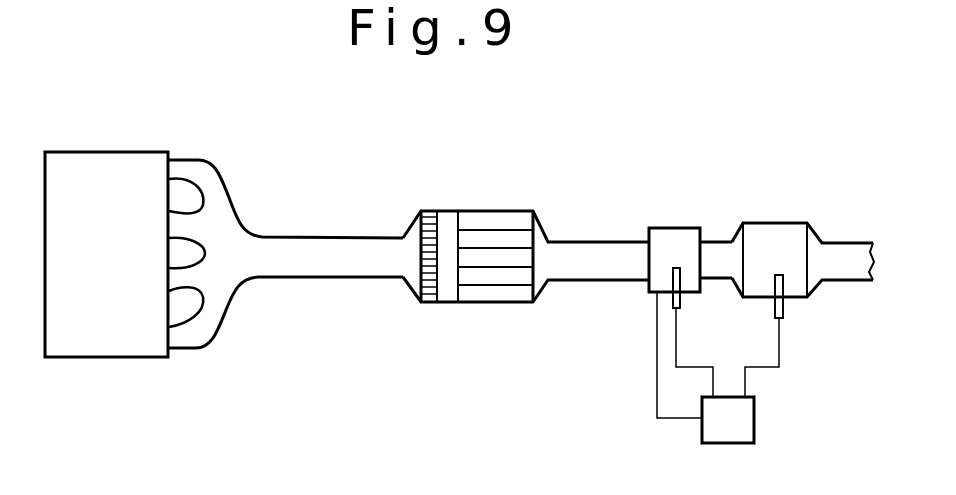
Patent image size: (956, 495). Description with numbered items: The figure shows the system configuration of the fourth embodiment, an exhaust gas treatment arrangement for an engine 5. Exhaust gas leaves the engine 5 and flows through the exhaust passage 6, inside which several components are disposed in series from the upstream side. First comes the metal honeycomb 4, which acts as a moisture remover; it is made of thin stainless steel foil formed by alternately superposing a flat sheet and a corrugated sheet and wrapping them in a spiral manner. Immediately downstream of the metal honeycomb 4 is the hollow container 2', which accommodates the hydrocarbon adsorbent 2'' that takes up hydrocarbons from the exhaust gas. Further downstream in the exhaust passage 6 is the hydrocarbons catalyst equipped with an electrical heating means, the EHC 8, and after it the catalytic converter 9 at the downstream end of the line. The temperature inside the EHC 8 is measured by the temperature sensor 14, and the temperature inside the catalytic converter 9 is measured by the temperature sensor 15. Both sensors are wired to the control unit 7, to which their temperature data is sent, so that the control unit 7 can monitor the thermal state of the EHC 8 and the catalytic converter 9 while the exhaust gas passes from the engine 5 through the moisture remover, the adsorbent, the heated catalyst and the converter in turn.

The engine 5 is at (152, 345).
The exhaust passage 6 is at (290, 270).
The metal honeycomb 4 is at (432, 213).
The hollow container 2' is at (526, 217).
The hydrocarbon adsorbent 2'' is at (503, 214).
The hydrocarbons catalyst equipped with electrical heating means (EHC) 8 is at (668, 238).
The catalytic converter 9 is at (788, 238).
The temperature sensor 14 is at (682, 301).
The temperature sensor 15 is at (785, 312).
The control unit 7 is at (742, 420).